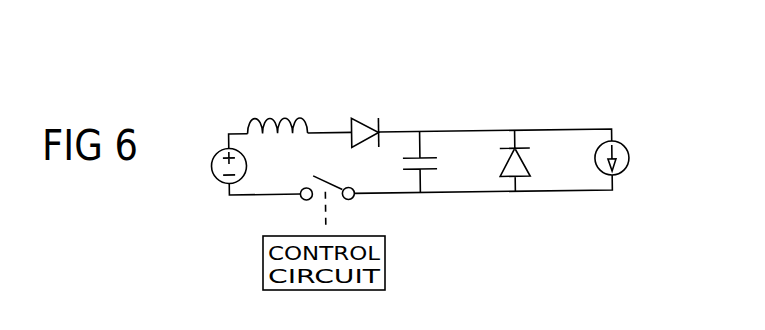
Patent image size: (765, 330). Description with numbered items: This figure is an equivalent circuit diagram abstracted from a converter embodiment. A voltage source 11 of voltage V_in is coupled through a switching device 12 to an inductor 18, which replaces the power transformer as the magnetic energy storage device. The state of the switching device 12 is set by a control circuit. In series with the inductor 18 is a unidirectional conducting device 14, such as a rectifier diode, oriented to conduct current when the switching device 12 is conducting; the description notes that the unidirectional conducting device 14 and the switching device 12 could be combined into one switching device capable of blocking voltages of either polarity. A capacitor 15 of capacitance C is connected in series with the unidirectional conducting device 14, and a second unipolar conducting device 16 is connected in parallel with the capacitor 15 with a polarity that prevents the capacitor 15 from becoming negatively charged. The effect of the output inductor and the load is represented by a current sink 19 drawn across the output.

The voltage source 11 is at (218, 165).
The switching device 12 is at (327, 177).
The unidirectional conducting device 14 is at (364, 120).
The capacitor 15 is at (432, 161).
The second unipolar conducting device 16 is at (525, 160).
The inductor 18 is at (277, 114).
The current sink 19 is at (625, 158).